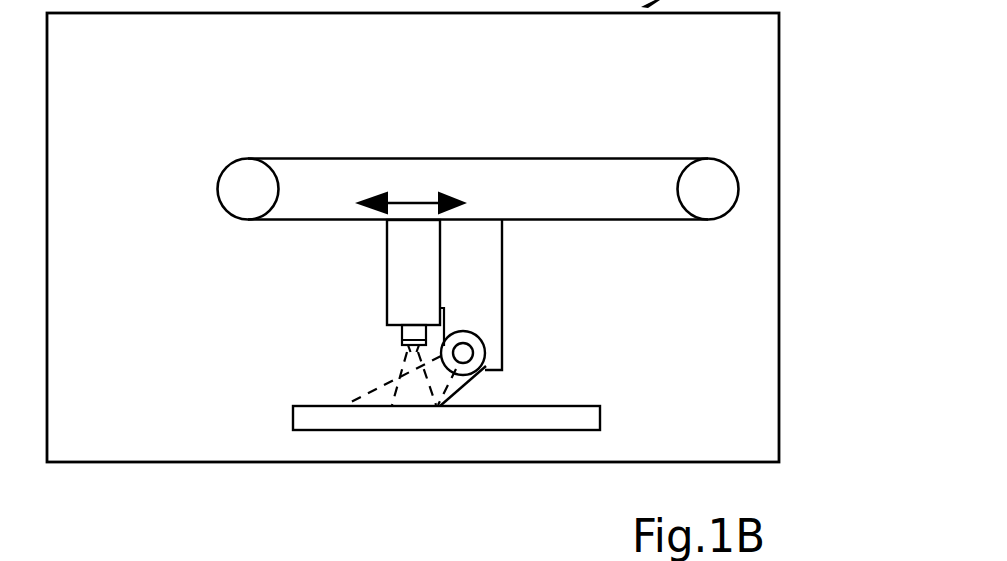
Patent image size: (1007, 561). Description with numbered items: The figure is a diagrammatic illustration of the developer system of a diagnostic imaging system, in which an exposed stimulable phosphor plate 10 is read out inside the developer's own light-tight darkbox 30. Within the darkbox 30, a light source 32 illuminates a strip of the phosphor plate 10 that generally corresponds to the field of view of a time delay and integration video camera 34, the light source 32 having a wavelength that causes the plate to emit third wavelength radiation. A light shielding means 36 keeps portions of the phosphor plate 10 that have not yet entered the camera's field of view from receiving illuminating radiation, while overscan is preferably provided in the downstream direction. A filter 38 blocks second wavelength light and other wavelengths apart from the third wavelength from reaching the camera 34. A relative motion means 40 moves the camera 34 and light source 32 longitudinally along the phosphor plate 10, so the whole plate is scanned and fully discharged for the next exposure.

The stimulable phosphor plate 10 is at (570, 405).
The darkbox 30 is at (780, 318).
The light source 32 is at (463, 353).
The time delay and integration video camera 34 is at (411, 269).
The light shielding means 36 is at (473, 378).
The filter 38 is at (402, 342).
The relative motion means 40 is at (707, 205).